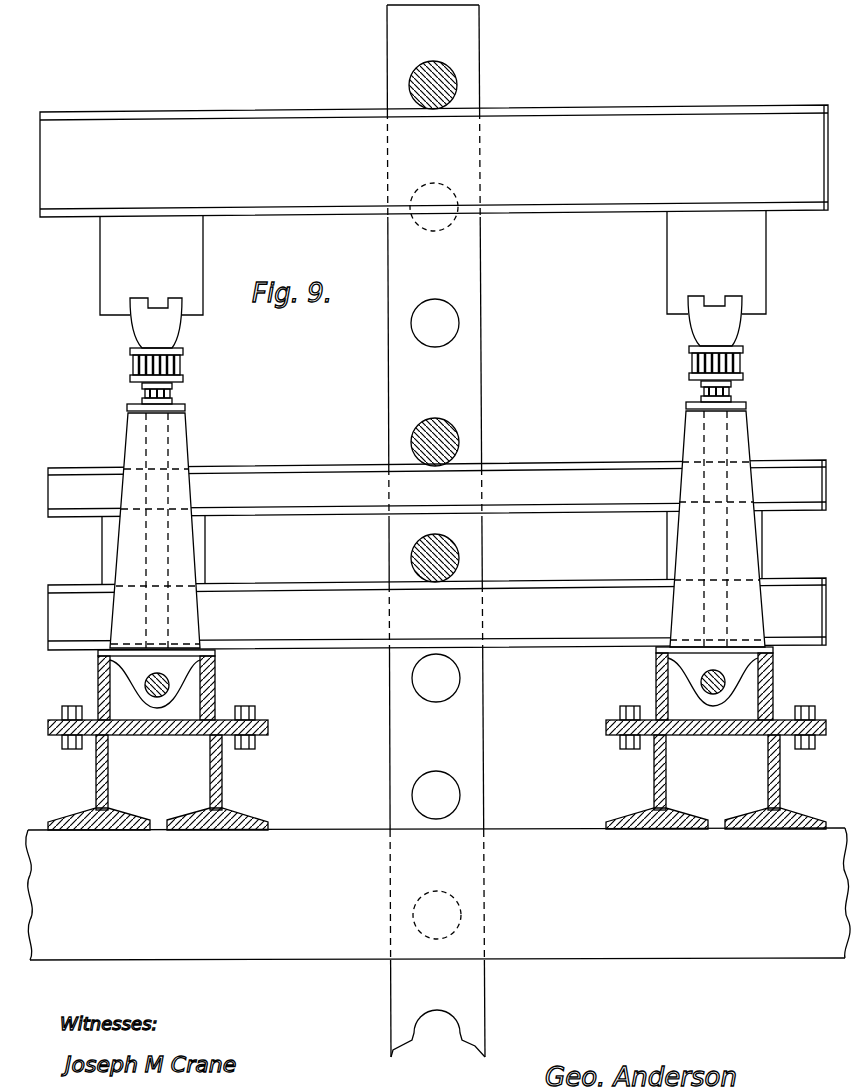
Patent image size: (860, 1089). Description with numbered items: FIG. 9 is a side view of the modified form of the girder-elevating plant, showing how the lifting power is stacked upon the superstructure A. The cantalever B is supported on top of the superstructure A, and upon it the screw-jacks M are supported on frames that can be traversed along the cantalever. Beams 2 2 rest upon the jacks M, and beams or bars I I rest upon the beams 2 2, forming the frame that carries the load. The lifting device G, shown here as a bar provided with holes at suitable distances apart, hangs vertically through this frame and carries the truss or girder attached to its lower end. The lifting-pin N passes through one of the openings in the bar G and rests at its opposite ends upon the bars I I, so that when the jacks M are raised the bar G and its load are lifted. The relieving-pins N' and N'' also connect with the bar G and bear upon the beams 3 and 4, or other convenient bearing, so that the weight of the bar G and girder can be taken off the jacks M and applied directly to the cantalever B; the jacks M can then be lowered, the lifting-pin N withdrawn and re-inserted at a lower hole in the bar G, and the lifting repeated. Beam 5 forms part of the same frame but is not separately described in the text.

The lifting device G is at (436, 531).
The lifting-pin N is at (460, 85).
The relieving-pin N' is at (464, 441).
The relieving-pin N'' is at (467, 558).
The beams or bars I is at (434, 161).
The beams 2 is at (433, 310).
The beam 3 is at (437, 488).
The beam 4 is at (758, 537).
The lower cross beam 5 is at (437, 614).
The screw-jack M is at (437, 529).
The cantalever B is at (216, 684).
The superstructure A is at (438, 894).